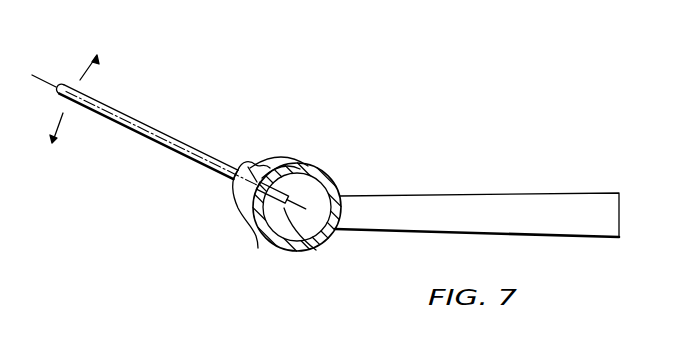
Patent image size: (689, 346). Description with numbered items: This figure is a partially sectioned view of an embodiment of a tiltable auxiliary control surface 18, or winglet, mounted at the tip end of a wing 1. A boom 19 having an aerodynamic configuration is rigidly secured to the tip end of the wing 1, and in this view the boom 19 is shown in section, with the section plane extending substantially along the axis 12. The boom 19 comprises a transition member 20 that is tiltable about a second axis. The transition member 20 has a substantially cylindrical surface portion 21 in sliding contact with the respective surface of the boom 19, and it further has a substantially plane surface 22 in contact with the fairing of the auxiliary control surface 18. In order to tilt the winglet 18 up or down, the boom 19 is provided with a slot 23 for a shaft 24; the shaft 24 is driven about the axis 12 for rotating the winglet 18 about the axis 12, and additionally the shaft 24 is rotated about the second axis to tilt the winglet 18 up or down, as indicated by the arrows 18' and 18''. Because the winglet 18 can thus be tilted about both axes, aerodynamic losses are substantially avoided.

The wing 1 is at (501, 200).
The axis 12 is at (53, 85).
The auxiliary control surface 18 is at (157, 135).
The arrow 18' is at (106, 75).
The arrow 18'' is at (79, 131).
The boom 19 is at (335, 187).
The transition member 20 is at (257, 171).
The substantially cylindrical surface portion 21 is at (258, 237).
The substantially plane surface 22 is at (243, 183).
The slot 23 is at (296, 172).
The shaft 24 is at (314, 247).